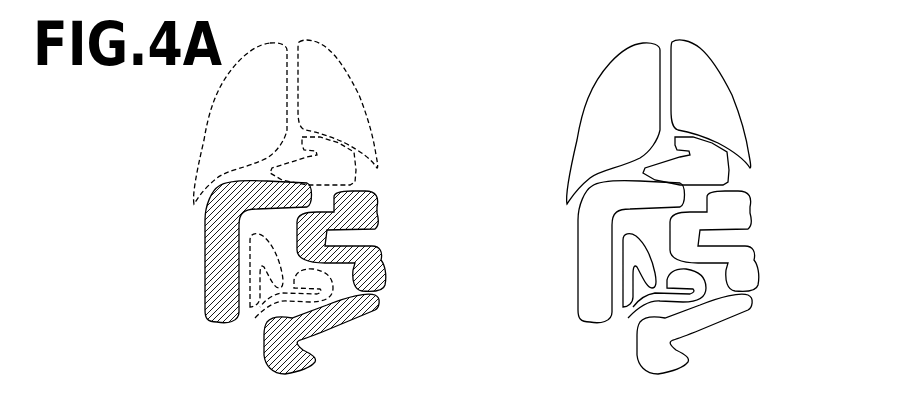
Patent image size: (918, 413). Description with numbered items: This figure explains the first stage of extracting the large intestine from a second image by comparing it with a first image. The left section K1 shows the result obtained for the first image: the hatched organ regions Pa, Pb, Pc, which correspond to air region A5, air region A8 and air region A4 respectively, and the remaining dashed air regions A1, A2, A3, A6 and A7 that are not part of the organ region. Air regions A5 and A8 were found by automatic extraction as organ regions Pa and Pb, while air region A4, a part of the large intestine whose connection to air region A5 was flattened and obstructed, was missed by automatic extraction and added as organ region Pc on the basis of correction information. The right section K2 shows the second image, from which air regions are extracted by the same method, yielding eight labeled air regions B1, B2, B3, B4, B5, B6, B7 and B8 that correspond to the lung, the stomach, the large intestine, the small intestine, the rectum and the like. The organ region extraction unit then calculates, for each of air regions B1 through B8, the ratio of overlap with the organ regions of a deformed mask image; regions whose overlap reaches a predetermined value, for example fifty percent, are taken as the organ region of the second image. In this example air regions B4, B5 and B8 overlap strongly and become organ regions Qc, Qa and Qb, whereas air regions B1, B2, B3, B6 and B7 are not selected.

The section K1 is at (363, 43).
The section K2 is at (737, 42).
The air region A1 is at (211, 117).
The air region A2 is at (363, 103).
The air region A3 is at (357, 180).
The air region A4 is at (210, 218).
The air region A5 is at (383, 267).
The air region A6 is at (257, 307).
The air region A7 is at (260, 310).
The air region A8 is at (360, 320).
The air region B1 is at (580, 117).
The air region B2 is at (740, 103).
The air region B3 is at (732, 177).
The air region B4 is at (582, 218).
The air region B5 is at (758, 267).
The air region B6 is at (620, 317).
The air region B7 is at (633, 310).
The air region B8 is at (730, 318).